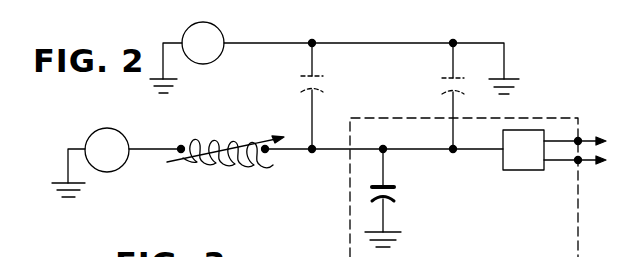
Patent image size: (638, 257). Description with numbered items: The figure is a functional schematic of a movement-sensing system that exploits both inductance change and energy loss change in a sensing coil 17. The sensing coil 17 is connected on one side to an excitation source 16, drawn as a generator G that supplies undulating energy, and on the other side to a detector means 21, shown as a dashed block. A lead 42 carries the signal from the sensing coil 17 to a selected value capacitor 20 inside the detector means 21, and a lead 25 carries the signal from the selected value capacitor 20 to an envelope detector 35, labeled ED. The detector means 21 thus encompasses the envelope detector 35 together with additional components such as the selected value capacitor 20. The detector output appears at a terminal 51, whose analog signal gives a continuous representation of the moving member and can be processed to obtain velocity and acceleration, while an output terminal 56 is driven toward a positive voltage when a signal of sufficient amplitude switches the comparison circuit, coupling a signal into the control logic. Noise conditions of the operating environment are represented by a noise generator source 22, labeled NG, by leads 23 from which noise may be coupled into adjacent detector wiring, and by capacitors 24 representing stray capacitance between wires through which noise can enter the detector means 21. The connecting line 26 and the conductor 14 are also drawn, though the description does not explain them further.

The conductor 14 is at (108, 4).
The excitation source 16 is at (88, 133).
The sensing coil 17 is at (216, 140).
The selected value capacitor 20 is at (393, 199).
The detector means 21 is at (345, 222).
The noise generator source 22 is at (184, 33).
The leads 23 is at (373, 43).
The capacitors 24 is at (305, 90).
The lead 25 is at (414, 149).
The conductor line 26 is at (181, 147).
The envelope detector 35 is at (509, 171).
The lead 42 is at (290, 148).
The terminal 51 is at (577, 164).
The output terminal 56 is at (578, 141).